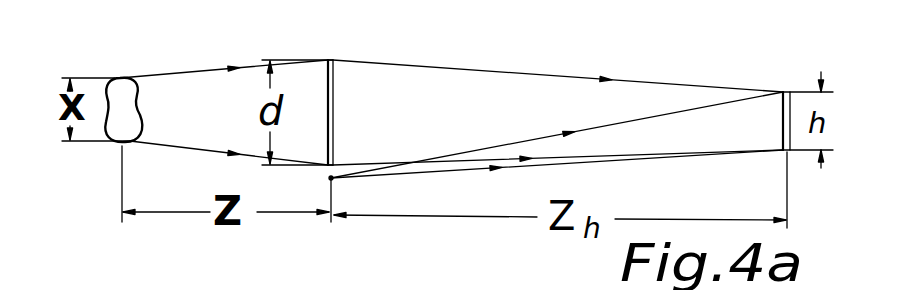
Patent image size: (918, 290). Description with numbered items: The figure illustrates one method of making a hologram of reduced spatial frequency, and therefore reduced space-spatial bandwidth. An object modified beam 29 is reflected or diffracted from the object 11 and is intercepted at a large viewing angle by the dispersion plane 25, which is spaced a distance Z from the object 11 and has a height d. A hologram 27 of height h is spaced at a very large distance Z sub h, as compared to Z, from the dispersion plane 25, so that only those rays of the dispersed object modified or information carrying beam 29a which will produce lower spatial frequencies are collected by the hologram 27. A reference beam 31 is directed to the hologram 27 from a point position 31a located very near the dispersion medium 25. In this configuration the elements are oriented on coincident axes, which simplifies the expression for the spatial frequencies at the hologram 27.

The object 11 is at (118, 78).
The object modified beam 29 is at (192, 70).
The dispersion plane 25 is at (331, 59).
The dispersed object modified beam 29a is at (383, 163).
The point position 31a is at (331, 179).
The reference beam 31 is at (627, 127).
The hologram 27 is at (789, 97).